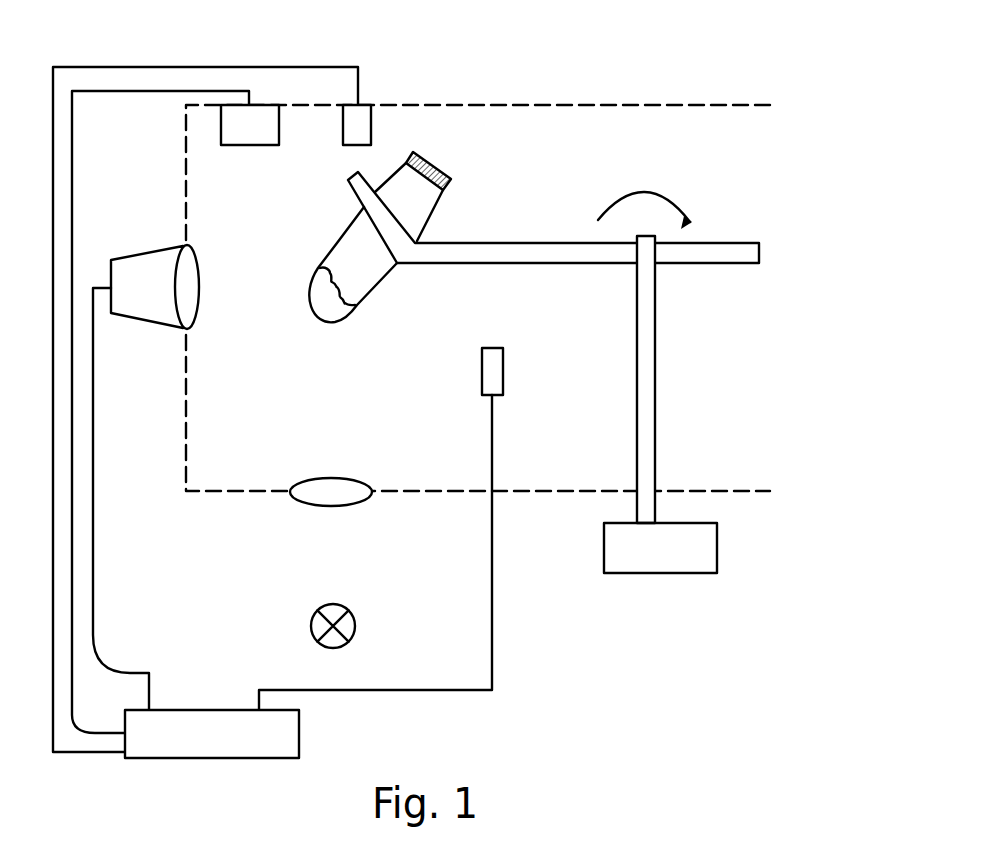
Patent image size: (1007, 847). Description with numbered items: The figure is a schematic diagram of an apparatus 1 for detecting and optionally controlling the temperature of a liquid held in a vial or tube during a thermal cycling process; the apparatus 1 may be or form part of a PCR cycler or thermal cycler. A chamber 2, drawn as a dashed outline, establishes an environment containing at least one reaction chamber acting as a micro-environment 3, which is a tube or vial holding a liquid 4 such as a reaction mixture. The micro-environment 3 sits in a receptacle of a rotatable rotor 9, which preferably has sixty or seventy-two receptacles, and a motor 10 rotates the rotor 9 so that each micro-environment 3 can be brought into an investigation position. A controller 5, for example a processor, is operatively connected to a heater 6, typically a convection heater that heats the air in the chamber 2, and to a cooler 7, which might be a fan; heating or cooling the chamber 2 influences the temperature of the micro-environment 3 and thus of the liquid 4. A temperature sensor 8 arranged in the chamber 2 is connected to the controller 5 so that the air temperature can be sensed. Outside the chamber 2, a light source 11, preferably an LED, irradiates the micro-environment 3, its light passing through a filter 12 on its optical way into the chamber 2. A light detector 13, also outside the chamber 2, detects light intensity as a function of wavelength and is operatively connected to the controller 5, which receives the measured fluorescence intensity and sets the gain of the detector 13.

The apparatus 1 is at (478, 295).
The chamber 2 is at (529, 492).
The micro-environment 3 is at (380, 282).
The liquid 4 is at (315, 288).
The controller 5 is at (203, 748).
The heater 6 is at (240, 141).
The cooler 7 is at (348, 141).
The temperature sensor 8 is at (504, 370).
The rotor 9 is at (518, 243).
The motor 10 is at (705, 546).
The light source 11 is at (356, 627).
The filter 12 is at (326, 478).
The light detector 13 is at (154, 270).